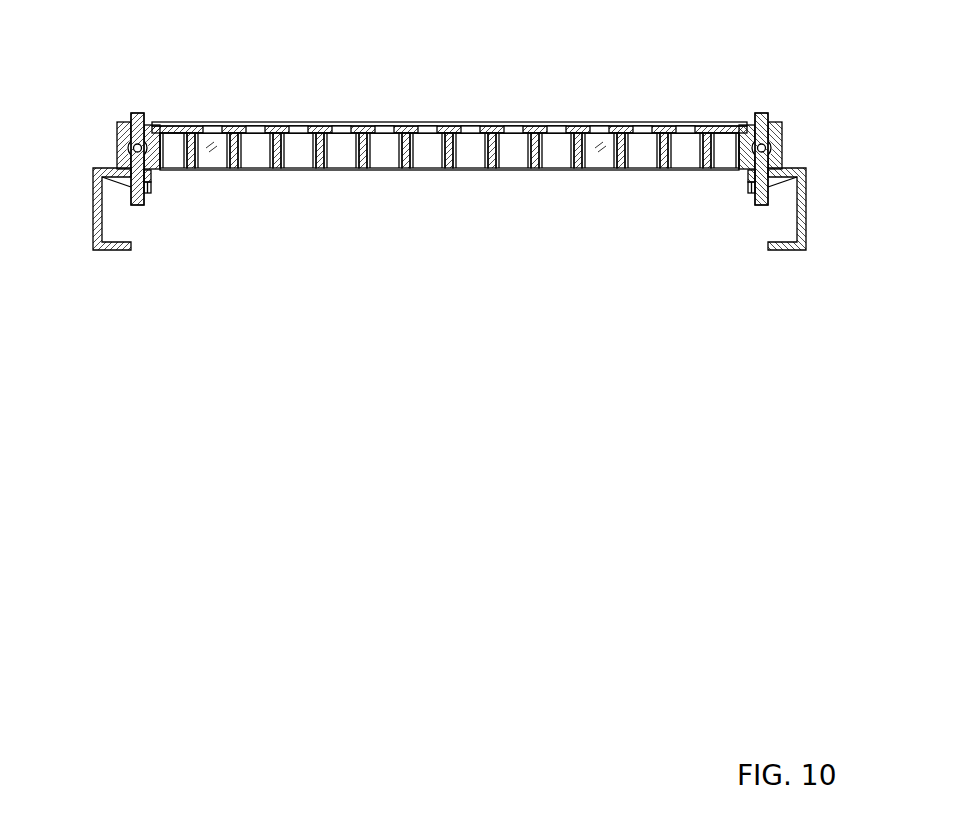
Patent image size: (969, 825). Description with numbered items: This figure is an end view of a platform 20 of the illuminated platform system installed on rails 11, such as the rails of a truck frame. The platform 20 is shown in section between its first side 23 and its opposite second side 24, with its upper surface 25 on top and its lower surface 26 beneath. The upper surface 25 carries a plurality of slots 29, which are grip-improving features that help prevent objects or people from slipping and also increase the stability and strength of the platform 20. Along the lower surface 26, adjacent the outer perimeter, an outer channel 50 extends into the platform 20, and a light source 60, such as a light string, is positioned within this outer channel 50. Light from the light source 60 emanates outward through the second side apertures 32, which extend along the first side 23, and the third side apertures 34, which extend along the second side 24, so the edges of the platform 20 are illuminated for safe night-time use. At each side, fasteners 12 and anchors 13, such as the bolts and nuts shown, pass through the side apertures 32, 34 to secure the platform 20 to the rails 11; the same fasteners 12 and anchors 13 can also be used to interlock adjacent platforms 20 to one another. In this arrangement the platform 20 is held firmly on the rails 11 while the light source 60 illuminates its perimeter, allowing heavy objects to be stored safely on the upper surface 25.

The rails 11 is at (110, 252).
The fasteners 12 is at (137, 206).
The anchors 13 is at (150, 185).
The platform 20 is at (449, 144).
The first side 23 is at (117, 122).
The second side 24 is at (783, 127).
The upper surface 25 is at (362, 122).
The lower surface 26 is at (362, 171).
The slots 29 is at (639, 127).
The second side apertures 32 is at (118, 148).
The third side apertures 34 is at (781, 148).
The outer channel 50 is at (145, 172).
The light source 60 is at (150, 146).